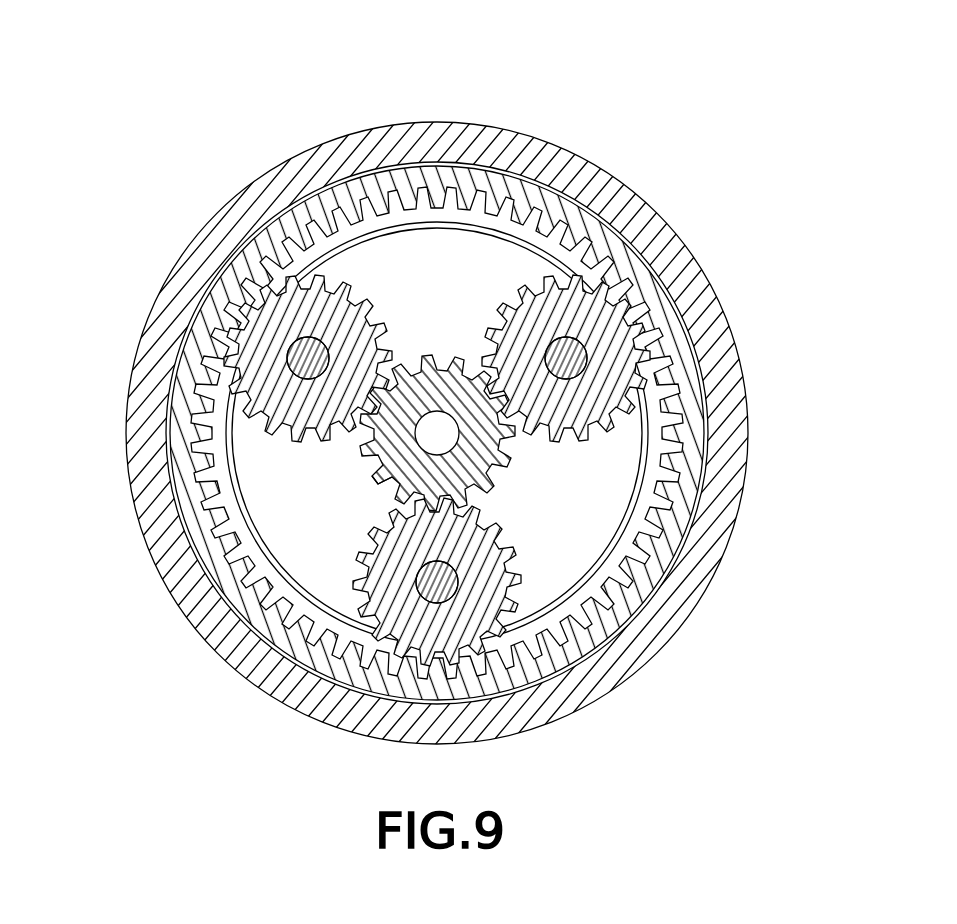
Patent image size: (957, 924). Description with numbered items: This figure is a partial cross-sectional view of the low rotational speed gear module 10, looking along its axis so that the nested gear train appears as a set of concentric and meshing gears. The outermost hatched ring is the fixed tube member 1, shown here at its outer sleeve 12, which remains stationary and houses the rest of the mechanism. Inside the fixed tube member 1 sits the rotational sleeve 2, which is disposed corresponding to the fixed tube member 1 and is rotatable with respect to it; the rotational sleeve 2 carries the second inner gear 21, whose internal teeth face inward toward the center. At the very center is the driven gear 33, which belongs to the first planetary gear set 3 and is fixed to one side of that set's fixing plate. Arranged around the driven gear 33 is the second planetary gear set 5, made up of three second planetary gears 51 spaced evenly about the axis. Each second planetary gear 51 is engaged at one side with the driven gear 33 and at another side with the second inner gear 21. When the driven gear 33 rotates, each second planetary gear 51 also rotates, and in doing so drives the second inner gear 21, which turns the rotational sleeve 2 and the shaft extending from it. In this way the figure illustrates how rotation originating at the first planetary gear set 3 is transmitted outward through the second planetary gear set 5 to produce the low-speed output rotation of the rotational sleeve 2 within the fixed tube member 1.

The low rotational speed gear module 10 is at (424, 49).
The fixed tube member 1 is at (524, 126).
The outer sleeve 12 is at (622, 195).
The rotational sleeve 2 is at (645, 672).
The second inner gear 21 is at (620, 548).
The first planetary gear set 3 is at (358, 454).
The driven gear 33 is at (380, 482).
The second planetary gear set 5 is at (593, 452).
The second planetary gear 51 is at (595, 333).